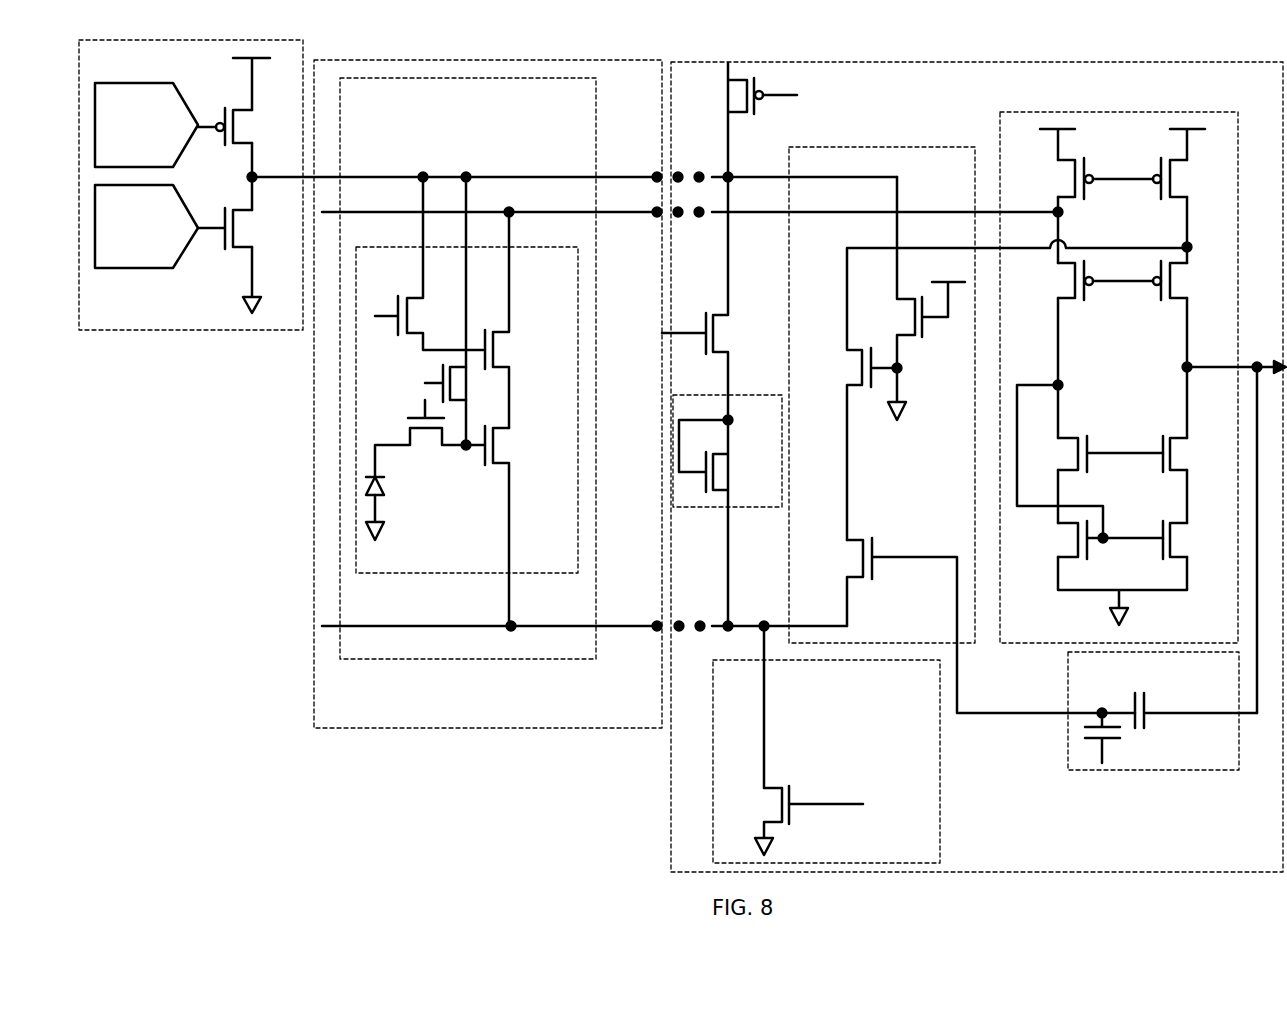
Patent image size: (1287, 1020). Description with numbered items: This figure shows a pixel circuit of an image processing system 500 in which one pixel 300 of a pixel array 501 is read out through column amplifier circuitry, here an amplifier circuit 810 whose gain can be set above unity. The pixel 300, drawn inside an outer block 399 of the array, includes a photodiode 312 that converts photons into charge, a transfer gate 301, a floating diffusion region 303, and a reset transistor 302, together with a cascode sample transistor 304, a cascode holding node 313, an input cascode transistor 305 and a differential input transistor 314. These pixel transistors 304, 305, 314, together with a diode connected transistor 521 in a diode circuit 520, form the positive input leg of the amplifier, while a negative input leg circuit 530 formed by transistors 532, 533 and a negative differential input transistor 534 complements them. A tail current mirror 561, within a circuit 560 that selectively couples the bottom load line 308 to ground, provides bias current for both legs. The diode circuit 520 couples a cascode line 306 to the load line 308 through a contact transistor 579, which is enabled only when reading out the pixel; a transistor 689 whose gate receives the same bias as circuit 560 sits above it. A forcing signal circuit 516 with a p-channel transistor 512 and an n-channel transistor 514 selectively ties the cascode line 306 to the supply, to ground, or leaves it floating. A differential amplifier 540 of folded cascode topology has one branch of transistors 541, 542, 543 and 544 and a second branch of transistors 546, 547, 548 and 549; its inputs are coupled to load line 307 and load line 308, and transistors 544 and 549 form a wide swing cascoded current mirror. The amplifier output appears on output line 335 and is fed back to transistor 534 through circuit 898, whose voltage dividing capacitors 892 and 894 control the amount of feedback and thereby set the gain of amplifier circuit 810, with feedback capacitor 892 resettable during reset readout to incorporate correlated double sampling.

The image processing system 500 is at (248, 791).
The pixel array 501 is at (488, 394).
The memory cell circuit 399 is at (434, 660).
The pixel 300 is at (467, 410).
The transfer gate 301 is at (421, 437).
The reset transistor 302 is at (455, 396).
The floating diffusion region 303 is at (470, 452).
The cascode sample transistor 304 is at (410, 326).
The input cascode transistor 305 is at (496, 360).
The cascode line 306 is at (628, 176).
The load line 307 is at (630, 216).
The load line 308 is at (634, 630).
The photodiode 312 is at (379, 490).
The cascode holding node 313 is at (476, 335).
The differential input transistor 314 is at (497, 449).
The output line 335 is at (1283, 355).
The p-channel transistor 512 is at (238, 130).
The n-channel transistor 514 is at (238, 230).
The forcing signal circuit 516 is at (174, 332).
The diode circuit 520 is at (680, 509).
The diode connected transistor 521 is at (718, 480).
The negative input leg circuit 530 is at (806, 645).
The transistor 532 is at (910, 320).
The transistor 533 is at (860, 375).
The negative differential input transistor 534 is at (860, 562).
The differential amplifier 540 is at (1034, 645).
The transistor 541 is at (1072, 190).
The transistor 542 is at (1072, 292).
The transistor 543 is at (1075, 462).
The transistor 544 is at (1075, 550).
The transistor 546 is at (1175, 193).
The transistor 547 is at (1175, 295).
The transistor 548 is at (1172, 462).
The transistor 549 is at (1172, 547).
The circuit 560 is at (942, 735).
The tail current mirror 561 is at (778, 806).
The contact transistor 579 is at (718, 345).
The bias transistor 689 is at (745, 104).
The amplifier circuit 810 is at (979, 467).
The feedback capacitor 892 is at (1143, 692).
The voltage dividing capacitor 894 is at (1103, 758).
The feedback circuit 898 is at (1135, 772).